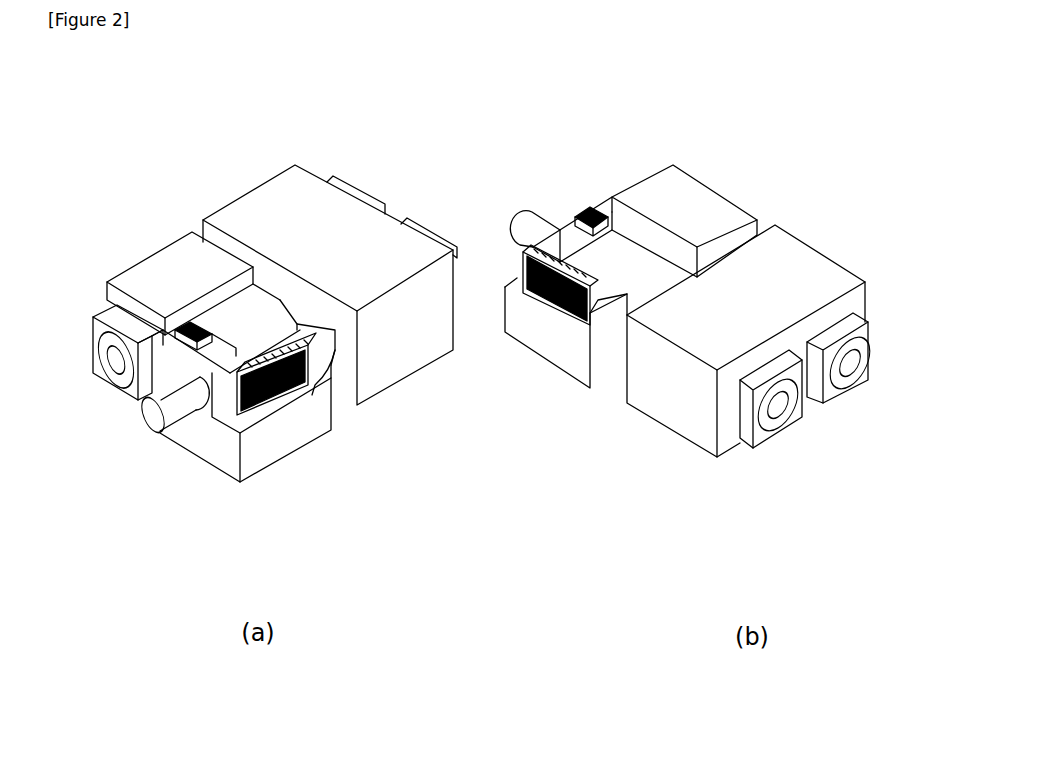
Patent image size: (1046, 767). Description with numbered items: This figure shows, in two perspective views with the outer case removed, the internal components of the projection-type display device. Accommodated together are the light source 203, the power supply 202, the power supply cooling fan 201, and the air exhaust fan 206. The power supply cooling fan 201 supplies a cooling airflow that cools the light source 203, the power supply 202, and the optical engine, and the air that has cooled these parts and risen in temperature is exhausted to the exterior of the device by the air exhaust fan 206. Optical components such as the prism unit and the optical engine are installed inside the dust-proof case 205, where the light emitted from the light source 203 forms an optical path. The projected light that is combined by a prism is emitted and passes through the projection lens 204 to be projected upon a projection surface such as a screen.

The power supply cooling fan 201 is at (105, 318).
The power supply 202 is at (220, 262).
The light source 203 is at (315, 198).
The projection lens 204 is at (152, 418).
The dust-proof case 205 is at (270, 437).
The air exhaust fan 206 is at (830, 397).